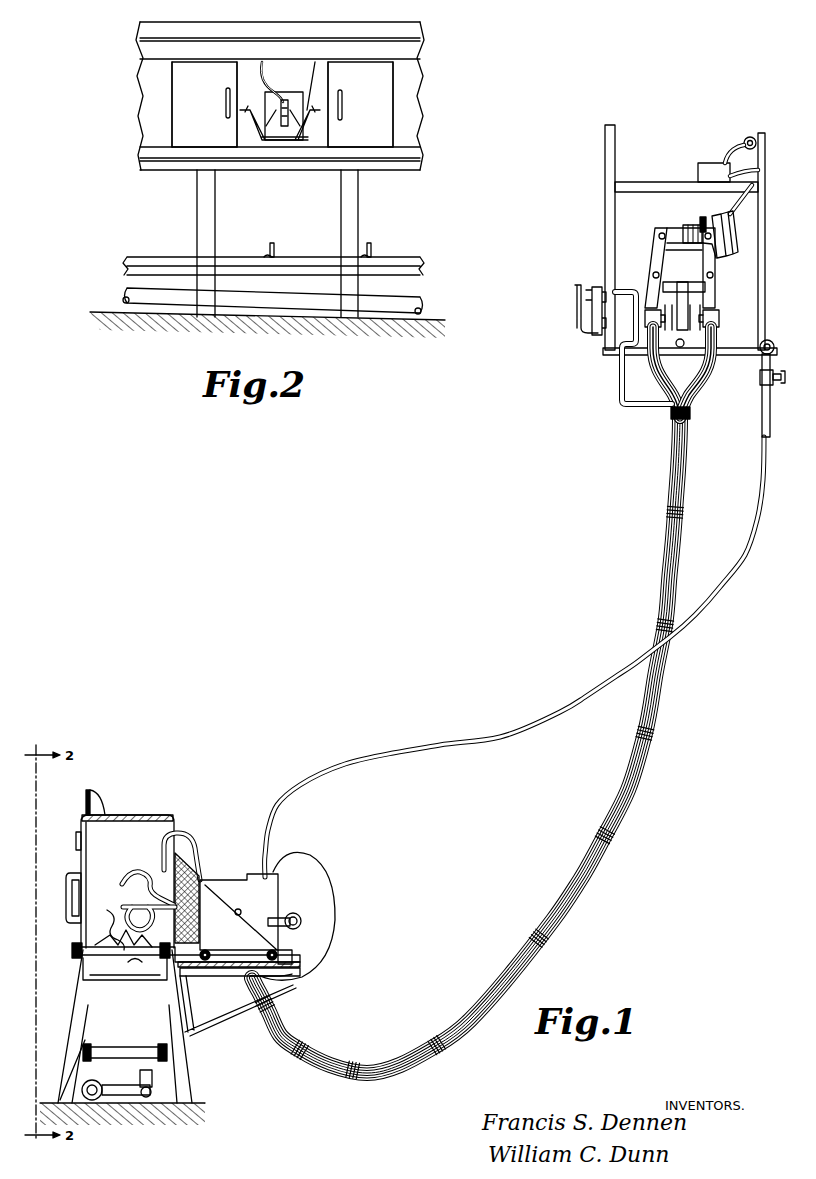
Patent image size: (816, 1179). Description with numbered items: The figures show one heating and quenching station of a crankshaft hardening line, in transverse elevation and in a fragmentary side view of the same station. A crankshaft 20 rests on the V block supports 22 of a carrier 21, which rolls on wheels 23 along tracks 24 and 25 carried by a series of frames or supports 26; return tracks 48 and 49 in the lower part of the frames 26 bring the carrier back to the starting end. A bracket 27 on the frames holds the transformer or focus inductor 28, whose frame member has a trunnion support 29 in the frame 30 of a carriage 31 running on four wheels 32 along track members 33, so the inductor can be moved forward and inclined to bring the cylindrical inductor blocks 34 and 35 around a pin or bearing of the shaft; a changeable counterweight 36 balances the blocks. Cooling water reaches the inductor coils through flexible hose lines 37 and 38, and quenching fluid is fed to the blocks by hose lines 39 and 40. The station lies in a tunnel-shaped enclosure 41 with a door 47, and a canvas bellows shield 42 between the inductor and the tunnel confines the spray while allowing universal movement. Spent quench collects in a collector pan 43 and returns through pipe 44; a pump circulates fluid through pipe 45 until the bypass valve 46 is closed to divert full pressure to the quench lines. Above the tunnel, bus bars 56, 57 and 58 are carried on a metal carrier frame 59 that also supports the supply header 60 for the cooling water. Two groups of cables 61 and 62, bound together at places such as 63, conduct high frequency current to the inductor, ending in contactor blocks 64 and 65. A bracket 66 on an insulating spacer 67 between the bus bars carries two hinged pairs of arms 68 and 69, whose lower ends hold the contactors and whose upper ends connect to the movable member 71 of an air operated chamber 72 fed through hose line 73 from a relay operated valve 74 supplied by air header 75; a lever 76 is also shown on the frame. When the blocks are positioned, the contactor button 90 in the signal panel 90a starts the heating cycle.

In FIG. 2, the crankshaft 20 is at (260, 140).
In FIG. 2, the carrier 21 is at (318, 256).
In FIG. 1, the carrier 21 is at (124, 976).
In FIG. 1, the V block supports 22 is at (107, 910).
In FIG. 1, the wheels 23 is at (102, 940).
In FIG. 1, the track 24 is at (72, 957).
In FIG. 1, the track 25 is at (186, 978).
In FIG. 2, the frames or supports 26 is at (196, 222).
In FIG. 1, the frames or supports 26 is at (75, 1016).
In FIG. 1, the bracket 27 is at (235, 1010).
In FIG. 1, the transformer (focus inductor) 28 is at (279, 886).
In FIG. 1, the trunnion support 29 is at (236, 910).
In FIG. 1, the frame of carriage 30 is at (279, 928).
In FIG. 1, the carriage 31 is at (282, 978).
In FIG. 1, the wheels 32 is at (290, 974).
In FIG. 1, the track members 33 is at (297, 958).
In FIG. 1, the inductor block 34 is at (135, 872).
In FIG. 1, the inductor block 35 is at (136, 904).
In FIG. 1, the changeable counterweight 36 is at (296, 914).
In FIG. 1, the flexible hose line 37 is at (365, 760).
In FIG. 1, the flexible hose line 38 is at (323, 868).
In FIG. 1, the hose line 39 is at (142, 982).
In FIG. 1, the hose line 40 is at (188, 838).
In FIG. 2, the enclosure (tunnel) 41 is at (386, 19).
In FIG. 1, the enclosure (tunnel) 41 is at (168, 814).
In FIG. 1, the flexible boot or bellows shaped shield 42 is at (200, 866).
In FIG. 1, the collector pan 43 is at (101, 978).
In FIG. 1, the pipe 44 is at (95, 1082).
In FIG. 1, the pipe 45 is at (145, 1100).
In FIG. 1, the bypass valve 46 is at (153, 1077).
In FIG. 2, the door 47 is at (212, 82).
In FIG. 1, the door 47 is at (76, 868).
In FIG. 2, the return track 48 is at (414, 292).
In FIG. 1, the return track 48 is at (85, 1054).
In FIG. 1, the return track 49 is at (168, 1054).
In FIG. 1, the bus bar 56 is at (654, 288).
In FIG. 1, the bus bar 57 is at (703, 307).
In FIG. 1, the bus bar 58 is at (680, 349).
In FIG. 1, the metal carrier frame 59 is at (767, 290).
In FIG. 1, the supply header 60 is at (772, 340).
In FIG. 1, the group of cables 61 is at (648, 376).
In FIG. 1, the group of cables 62 is at (702, 392).
In FIG. 1, the cable binding 63 is at (654, 736).
In FIG. 1, the contactor block (terminal) 64 is at (644, 318).
In FIG. 1, the contactor block (terminal) 65 is at (720, 318).
In FIG. 1, the bracket 66 is at (688, 265).
In FIG. 1, the insulating spacer 67 is at (701, 291).
In FIG. 1, the arms 68 is at (655, 248).
In FIG. 1, the arms 69 is at (720, 262).
In FIG. 1, the movable member 71 is at (705, 218).
In FIG. 1, the air operated chamber 72 is at (731, 228).
In FIG. 1, the hose line 73 is at (758, 176).
In FIG. 1, the relay operated valve 74 is at (716, 160).
In FIG. 1, the supply header 75 is at (748, 138).
In FIG. 1, the lever 76 is at (576, 316).
In FIG. 1, the contactor button 90 is at (87, 802).
In FIG. 1, the signal panel 90a is at (95, 802).